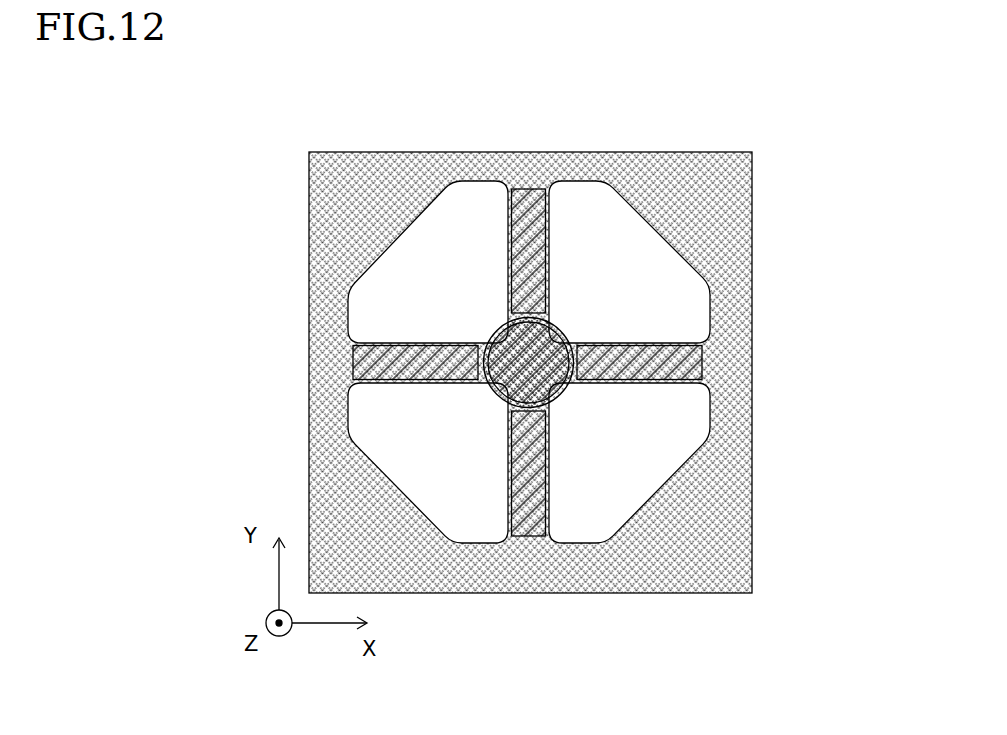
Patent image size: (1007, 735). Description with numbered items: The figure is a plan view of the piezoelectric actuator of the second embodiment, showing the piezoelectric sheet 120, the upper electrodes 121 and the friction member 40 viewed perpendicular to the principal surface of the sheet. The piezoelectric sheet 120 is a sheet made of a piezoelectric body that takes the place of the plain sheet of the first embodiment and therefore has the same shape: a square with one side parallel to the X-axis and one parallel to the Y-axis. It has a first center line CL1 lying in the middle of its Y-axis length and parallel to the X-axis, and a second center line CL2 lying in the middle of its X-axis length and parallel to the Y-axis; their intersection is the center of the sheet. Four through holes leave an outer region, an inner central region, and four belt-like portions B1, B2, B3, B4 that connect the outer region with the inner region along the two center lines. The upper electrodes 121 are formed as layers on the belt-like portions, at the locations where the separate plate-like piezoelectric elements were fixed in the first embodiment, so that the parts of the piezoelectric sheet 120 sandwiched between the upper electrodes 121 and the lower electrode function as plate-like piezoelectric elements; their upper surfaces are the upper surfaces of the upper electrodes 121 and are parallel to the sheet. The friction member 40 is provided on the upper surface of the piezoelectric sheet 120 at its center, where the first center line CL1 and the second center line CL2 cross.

The piezoelectric sheet 120 is at (752, 212).
The upper electrodes 121 is at (352, 348).
The friction member 40 is at (566, 330).
The belt-like portion B1 is at (551, 262).
The belt-like portion B2 is at (407, 343).
The belt-like portion B3 is at (507, 478).
The belt-like portion B4 is at (610, 381).
The first center line CL1 is at (275, 362).
The second center line CL2 is at (528, 622).